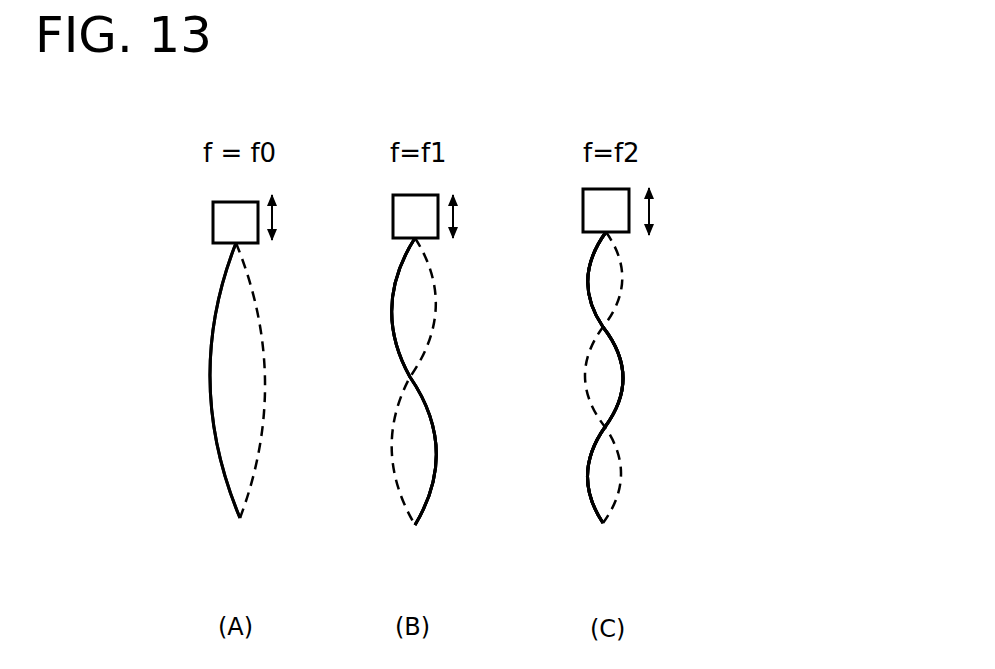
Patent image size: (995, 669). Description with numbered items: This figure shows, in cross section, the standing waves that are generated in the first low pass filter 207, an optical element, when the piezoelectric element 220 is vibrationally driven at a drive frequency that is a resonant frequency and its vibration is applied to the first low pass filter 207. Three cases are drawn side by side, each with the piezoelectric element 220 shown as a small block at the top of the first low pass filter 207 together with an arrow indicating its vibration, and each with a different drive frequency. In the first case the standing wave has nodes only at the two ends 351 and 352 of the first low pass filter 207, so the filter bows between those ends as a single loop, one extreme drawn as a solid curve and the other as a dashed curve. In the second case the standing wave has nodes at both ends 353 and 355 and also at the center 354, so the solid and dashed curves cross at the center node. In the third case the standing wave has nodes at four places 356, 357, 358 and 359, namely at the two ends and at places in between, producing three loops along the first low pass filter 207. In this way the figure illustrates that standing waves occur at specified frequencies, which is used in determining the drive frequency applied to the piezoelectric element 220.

The first low pass filter 207 is at (264, 512).
The piezoelectric element 220 is at (212, 222).
The node at one end of the first low pass filter 351 is at (205, 250).
The node at the other end of the first low pass filter 352 is at (222, 520).
The node at one end 353 is at (397, 255).
The node at the center 354 is at (397, 377).
The node at the other end 355 is at (400, 518).
The node (first of four) 356 is at (638, 252).
The node (second of four) 357 is at (589, 330).
The node (third of four) 358 is at (627, 427).
The node (fourth of four) 359 is at (590, 528).